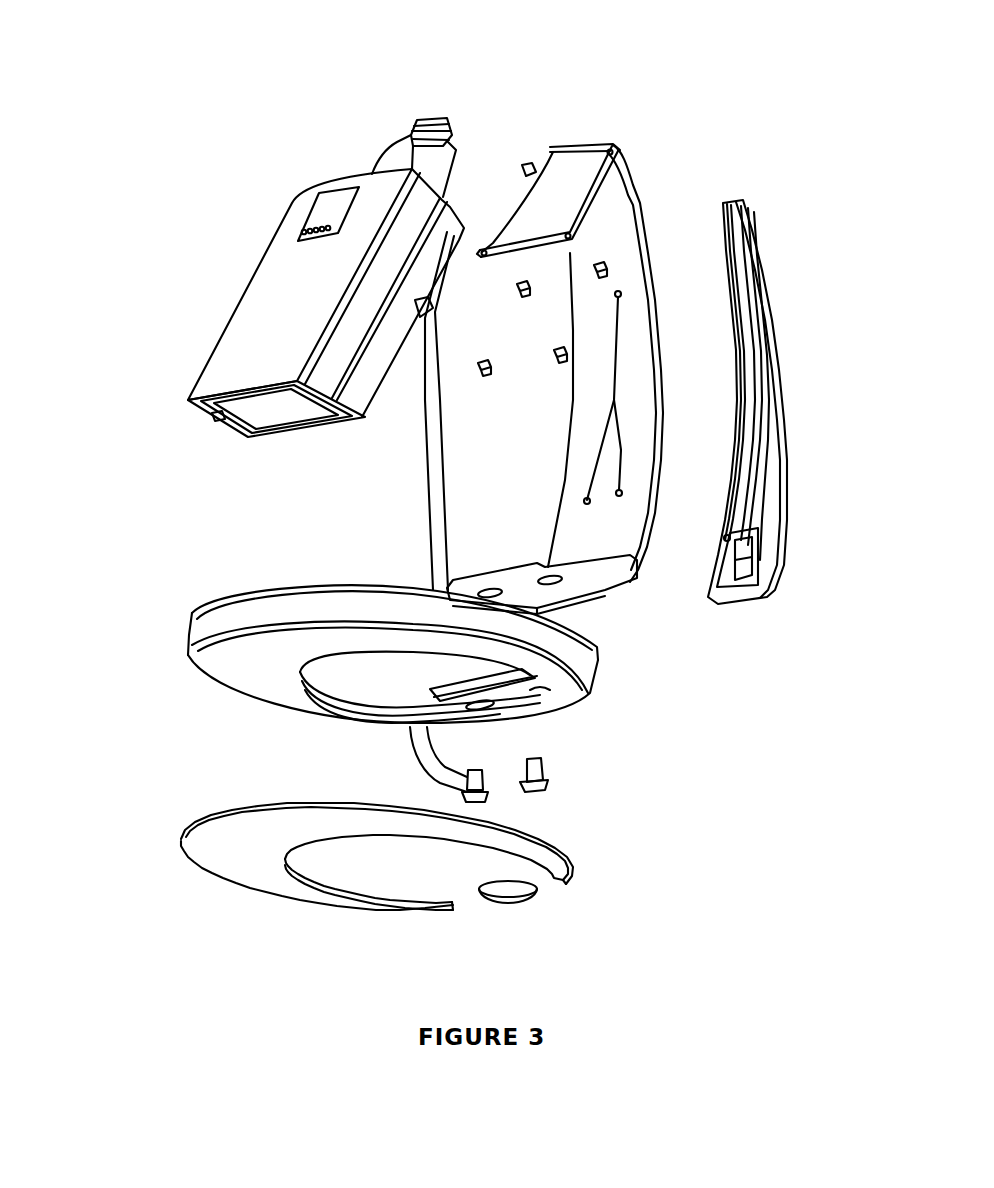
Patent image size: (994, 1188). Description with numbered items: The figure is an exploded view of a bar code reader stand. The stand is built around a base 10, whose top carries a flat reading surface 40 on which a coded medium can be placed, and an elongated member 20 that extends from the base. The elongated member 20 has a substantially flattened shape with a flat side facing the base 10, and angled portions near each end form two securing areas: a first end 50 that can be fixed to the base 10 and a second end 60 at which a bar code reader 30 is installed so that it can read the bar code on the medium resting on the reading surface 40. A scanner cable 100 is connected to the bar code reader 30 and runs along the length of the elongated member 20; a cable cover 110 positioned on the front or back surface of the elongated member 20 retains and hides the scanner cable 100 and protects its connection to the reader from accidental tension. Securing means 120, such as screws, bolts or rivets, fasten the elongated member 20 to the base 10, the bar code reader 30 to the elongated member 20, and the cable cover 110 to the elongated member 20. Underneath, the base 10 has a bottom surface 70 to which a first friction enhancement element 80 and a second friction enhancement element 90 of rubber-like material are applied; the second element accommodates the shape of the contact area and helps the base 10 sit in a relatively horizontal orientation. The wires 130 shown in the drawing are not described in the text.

The base 10 is at (262, 613).
The elongated member 20 is at (627, 215).
The bar code reader 30 is at (272, 288).
The reading surface 40 is at (327, 587).
The first end 50 is at (513, 563).
The second end 60 is at (533, 158).
The bottom surface 70 is at (217, 647).
The first friction enhancement element 80 is at (237, 853).
The second friction enhancement element 90 is at (523, 897).
The scanner cable 100 is at (440, 120).
The cable cover 110 is at (773, 408).
The securing means 120 is at (593, 272).
The wires 130 is at (605, 397).